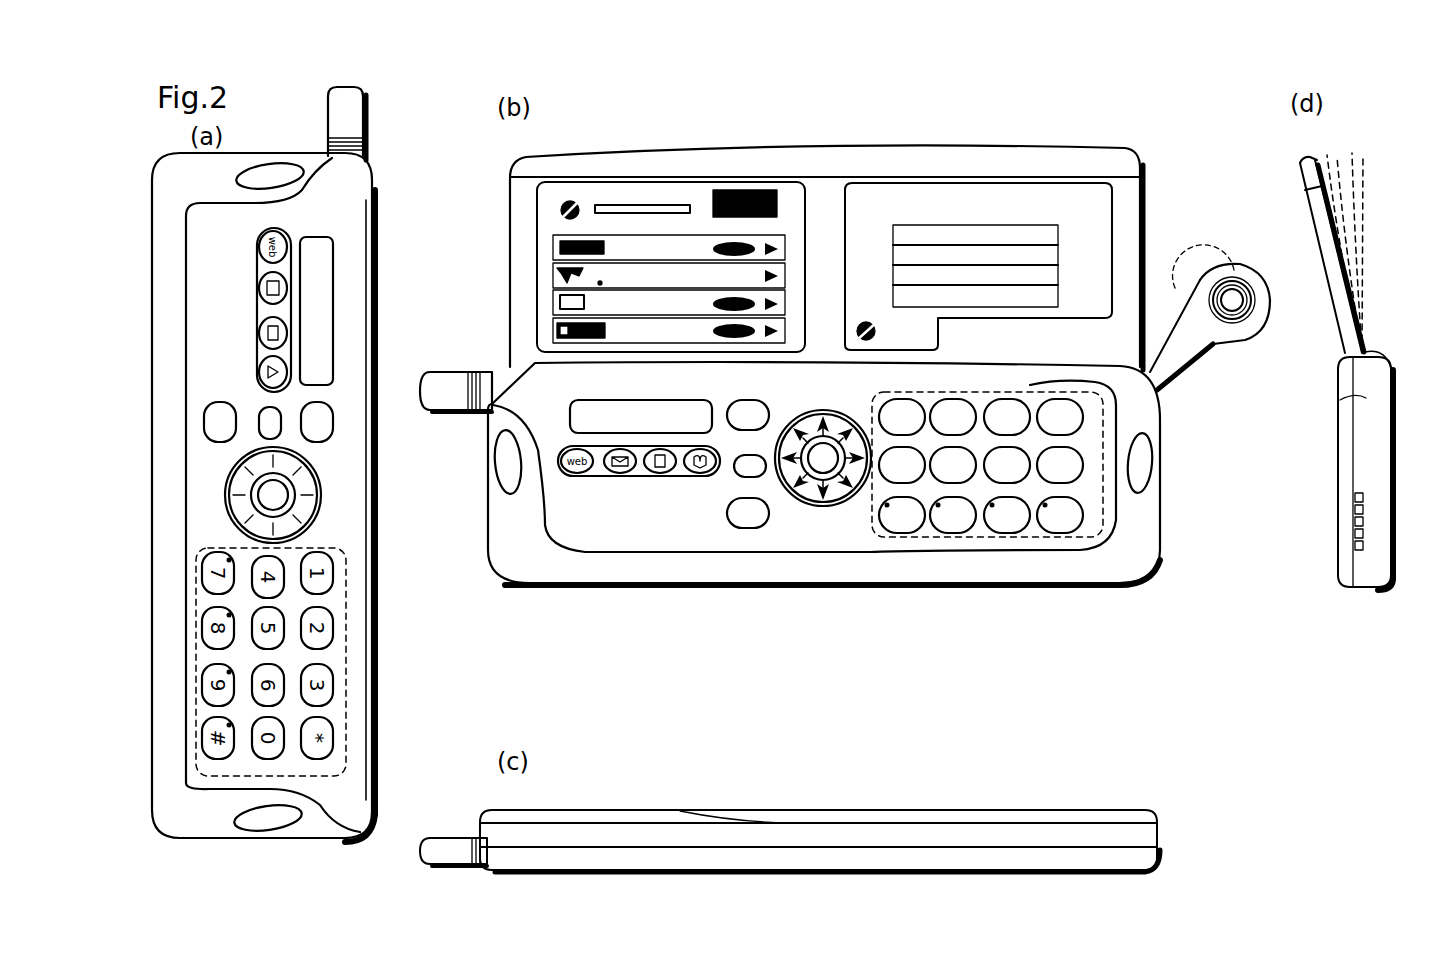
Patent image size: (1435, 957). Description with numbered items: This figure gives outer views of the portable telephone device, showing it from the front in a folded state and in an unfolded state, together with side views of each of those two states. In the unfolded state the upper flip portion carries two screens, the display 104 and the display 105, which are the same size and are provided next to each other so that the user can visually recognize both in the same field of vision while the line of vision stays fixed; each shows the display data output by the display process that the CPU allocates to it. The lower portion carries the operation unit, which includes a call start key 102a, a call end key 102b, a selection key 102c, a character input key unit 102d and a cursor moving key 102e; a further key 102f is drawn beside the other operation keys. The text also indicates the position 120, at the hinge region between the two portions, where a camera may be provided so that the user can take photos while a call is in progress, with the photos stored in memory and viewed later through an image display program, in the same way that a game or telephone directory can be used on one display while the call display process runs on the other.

The display 104 is at (656, 180).
The display 105 is at (950, 183).
The camera position 120 is at (1240, 264).
The call start key 102a is at (762, 410).
The call end key 102b is at (743, 526).
The selection key 102c is at (815, 488).
The character input key unit 102d is at (1163, 392).
The cursor moving key 102e is at (838, 488).
The operation button 102f is at (740, 474).